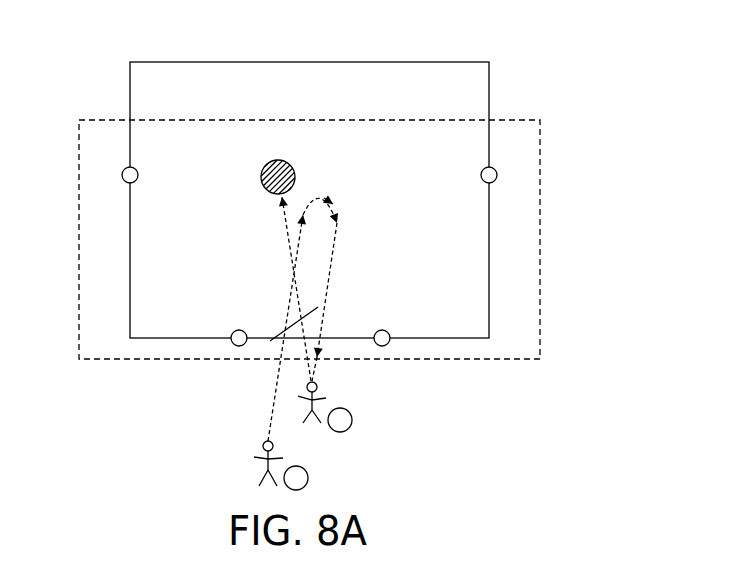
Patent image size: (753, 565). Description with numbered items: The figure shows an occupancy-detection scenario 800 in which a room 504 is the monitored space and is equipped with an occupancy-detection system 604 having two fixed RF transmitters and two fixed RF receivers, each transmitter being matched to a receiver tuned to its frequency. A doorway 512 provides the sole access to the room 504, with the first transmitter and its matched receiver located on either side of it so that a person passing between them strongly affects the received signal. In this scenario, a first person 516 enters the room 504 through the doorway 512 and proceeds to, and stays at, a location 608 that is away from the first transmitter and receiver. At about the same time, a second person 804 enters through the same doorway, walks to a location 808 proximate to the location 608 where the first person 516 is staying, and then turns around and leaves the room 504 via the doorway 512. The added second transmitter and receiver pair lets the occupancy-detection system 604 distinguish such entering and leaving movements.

The occupancy-detection scenario 800 is at (523, 81).
The room 504 is at (331, 104).
The occupancy-detection system 604 is at (540, 252).
The location 608 is at (302, 165).
The location 808 is at (350, 213).
The doorway 512 is at (278, 344).
The person 516 is at (338, 394).
The person 804 is at (240, 457).